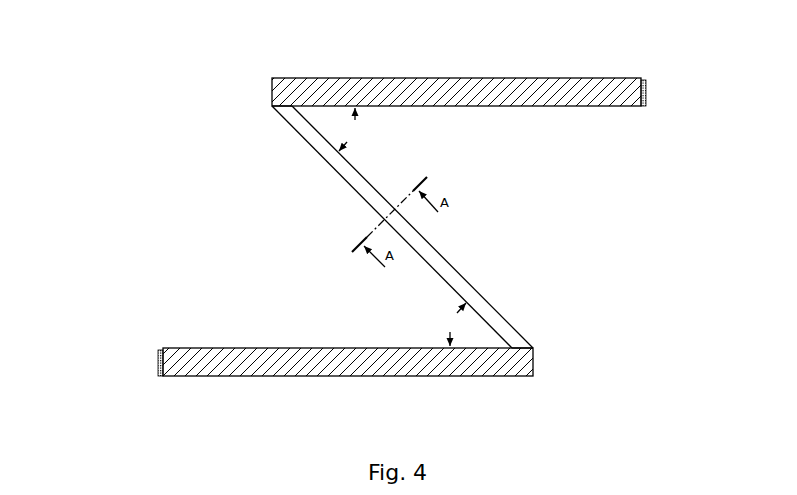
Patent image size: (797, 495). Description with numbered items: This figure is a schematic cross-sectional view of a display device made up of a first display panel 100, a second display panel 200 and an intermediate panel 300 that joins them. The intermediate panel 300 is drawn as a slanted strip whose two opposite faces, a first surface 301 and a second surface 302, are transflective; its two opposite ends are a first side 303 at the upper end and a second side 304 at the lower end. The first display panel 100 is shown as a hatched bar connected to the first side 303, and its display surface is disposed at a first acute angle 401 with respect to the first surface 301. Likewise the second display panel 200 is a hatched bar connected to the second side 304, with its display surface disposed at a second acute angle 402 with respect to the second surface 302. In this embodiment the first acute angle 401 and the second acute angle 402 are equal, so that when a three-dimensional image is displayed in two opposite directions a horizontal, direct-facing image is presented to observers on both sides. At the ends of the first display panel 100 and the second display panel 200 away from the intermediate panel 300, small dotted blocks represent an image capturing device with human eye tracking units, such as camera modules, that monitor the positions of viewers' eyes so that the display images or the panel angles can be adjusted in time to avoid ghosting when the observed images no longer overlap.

The first display panel 100 is at (598, 88).
The second display panel 200 is at (193, 353).
The intermediate panel 300 is at (396, 229).
The first surface 301 is at (447, 261).
The second surface 302 is at (437, 271).
The first side 303 is at (273, 106).
The second side 304 is at (533, 348).
The first acute angle 401 is at (352, 129).
The second acute angle 402 is at (454, 324).